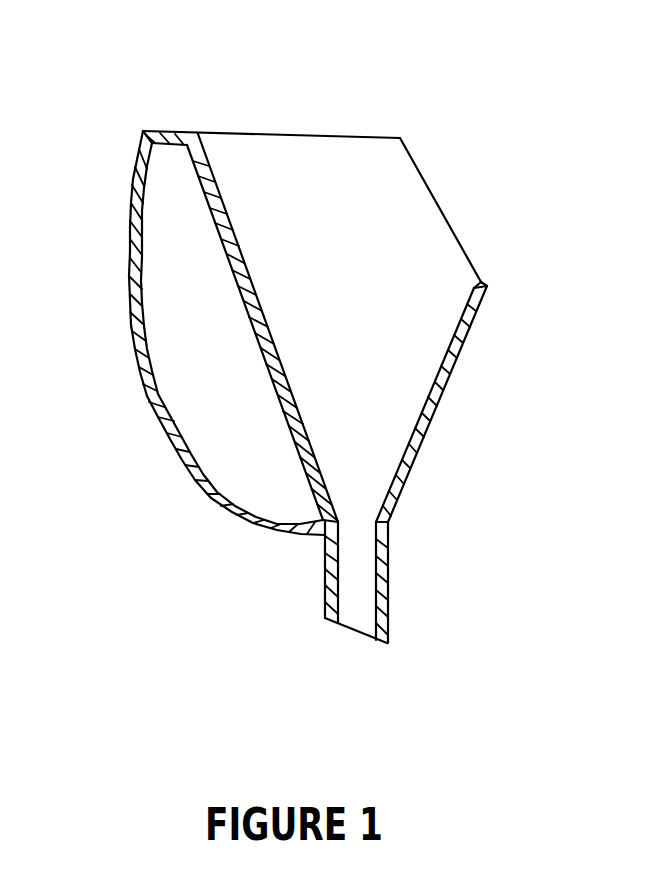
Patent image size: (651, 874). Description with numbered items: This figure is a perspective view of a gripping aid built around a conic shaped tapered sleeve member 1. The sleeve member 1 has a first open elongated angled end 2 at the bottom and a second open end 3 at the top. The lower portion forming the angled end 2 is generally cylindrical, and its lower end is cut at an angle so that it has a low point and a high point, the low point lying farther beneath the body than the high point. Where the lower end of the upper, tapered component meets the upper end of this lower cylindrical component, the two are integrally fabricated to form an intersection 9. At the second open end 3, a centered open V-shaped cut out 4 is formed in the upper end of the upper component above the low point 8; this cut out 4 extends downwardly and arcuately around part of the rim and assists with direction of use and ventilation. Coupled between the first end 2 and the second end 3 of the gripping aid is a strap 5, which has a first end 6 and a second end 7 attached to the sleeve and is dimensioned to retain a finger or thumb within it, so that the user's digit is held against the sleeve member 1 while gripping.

The tapered sleeve member 1 is at (370, 268).
The first open elongated angled end 2 is at (388, 610).
The second open end 3 is at (326, 135).
The V-shaped cut out 4 is at (433, 197).
The strap 5 is at (133, 320).
The first end of strap 6 is at (325, 537).
The second end of strap 7 is at (143, 133).
The low point 8 is at (489, 285).
The intersection 9 is at (388, 527).